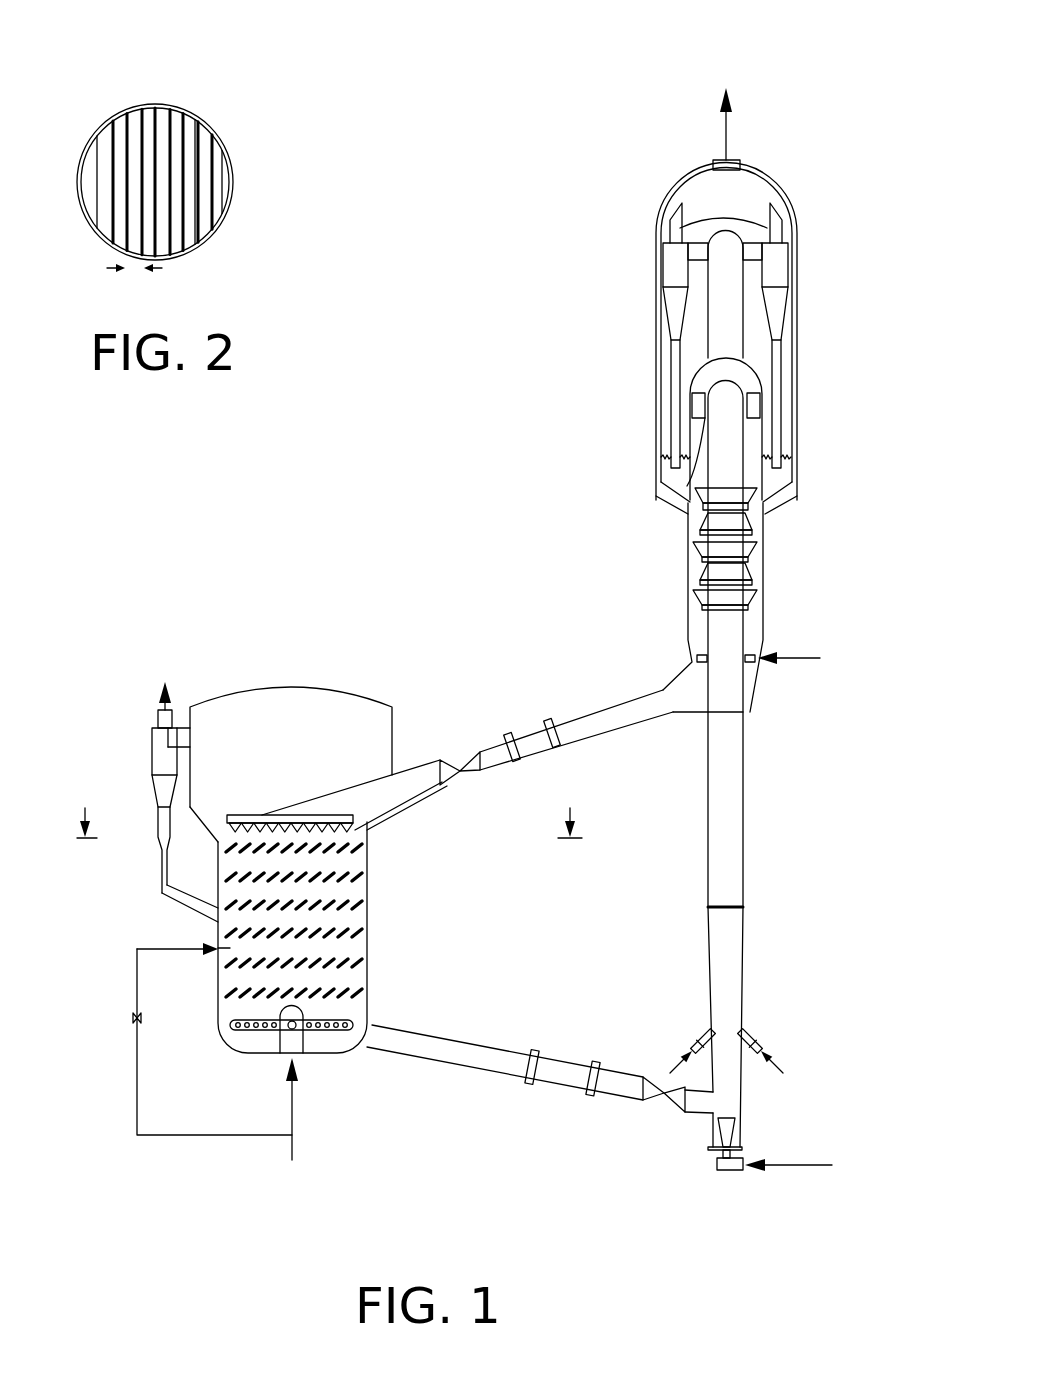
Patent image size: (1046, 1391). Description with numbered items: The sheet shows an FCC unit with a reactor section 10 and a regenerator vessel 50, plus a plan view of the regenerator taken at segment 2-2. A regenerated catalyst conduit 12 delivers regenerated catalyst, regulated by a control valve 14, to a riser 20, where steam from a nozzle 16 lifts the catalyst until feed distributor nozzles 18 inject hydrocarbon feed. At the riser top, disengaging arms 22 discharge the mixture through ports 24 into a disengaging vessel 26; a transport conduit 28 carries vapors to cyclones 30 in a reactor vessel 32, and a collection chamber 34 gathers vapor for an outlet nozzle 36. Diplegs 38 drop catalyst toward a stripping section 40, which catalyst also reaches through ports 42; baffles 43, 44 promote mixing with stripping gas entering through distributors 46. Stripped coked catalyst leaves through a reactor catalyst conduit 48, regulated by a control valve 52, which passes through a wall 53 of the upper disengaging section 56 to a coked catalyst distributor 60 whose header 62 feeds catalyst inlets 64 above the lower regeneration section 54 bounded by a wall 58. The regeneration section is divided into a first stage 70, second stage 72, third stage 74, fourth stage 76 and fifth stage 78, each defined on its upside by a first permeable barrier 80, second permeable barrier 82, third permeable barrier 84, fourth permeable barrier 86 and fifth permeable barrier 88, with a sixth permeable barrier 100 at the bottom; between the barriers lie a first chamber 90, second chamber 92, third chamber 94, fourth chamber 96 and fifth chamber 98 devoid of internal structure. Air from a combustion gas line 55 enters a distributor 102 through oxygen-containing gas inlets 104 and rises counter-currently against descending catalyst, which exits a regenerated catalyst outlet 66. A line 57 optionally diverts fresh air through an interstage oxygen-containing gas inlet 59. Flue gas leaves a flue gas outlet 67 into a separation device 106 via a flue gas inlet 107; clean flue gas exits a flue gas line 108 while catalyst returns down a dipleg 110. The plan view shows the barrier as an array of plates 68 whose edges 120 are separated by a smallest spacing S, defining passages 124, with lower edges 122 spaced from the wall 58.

In FIG. 1, the reactor section 10 is at (819, 114).
In FIG. 1, the regenerated catalyst conduit 12 is at (580, 1070).
In FIG. 1, the control valve 14 is at (662, 1100).
In FIG. 1, the nozzle 16 is at (731, 1130).
In FIG. 1, the feed distributor nozzles 18 is at (708, 1035).
In FIG. 1, the riser 20 is at (742, 869).
In FIG. 1, the disengaging arms 22 is at (668, 498).
In FIG. 1, the ports 24 is at (757, 405).
In FIG. 1, the disengaging vessel 26 is at (795, 492).
In FIG. 1, the transport conduit 28 is at (726, 332).
In FIG. 1, the cyclones 30 is at (670, 268).
In FIG. 1, the reactor vessel 32 is at (790, 392).
In FIG. 1, the collection chamber 34 is at (752, 187).
In FIG. 1, the outlet nozzle 36 is at (713, 160).
In FIG. 1, the diplegs 38 is at (673, 412).
In FIG. 1, the stripping section 40 is at (760, 582).
In FIG. 1, the ports 42 is at (760, 505).
In FIG. 1, the baffles 43 is at (752, 549).
In FIG. 1, the baffles 44 is at (748, 520).
In FIG. 1, the distributors 46 is at (750, 666).
In FIG. 1, the reactor catalyst conduit 48 is at (598, 738).
In FIG. 2, the regenerator vessel 50 is at (206, 36).
In FIG. 1, the regenerator vessel 50 is at (42, 650).
In FIG. 1, the control valve 52 is at (456, 760).
In FIG. 1, the wall 53 is at (392, 732).
In FIG. 2, the regeneration section 54 is at (242, 224).
In FIG. 1, the regeneration section 54 is at (218, 990).
In FIG. 1, the combustion gas line 55 is at (293, 1146).
In FIG. 1, the disengaging section 56 is at (250, 700).
In FIG. 1, the line 57 is at (137, 1094).
In FIG. 2, the wall 58 is at (80, 163).
In FIG. 1, the wall 58 is at (217, 983).
In FIG. 1, the interstage oxygen-containing gas inlet 59 is at (222, 945).
In FIG. 1, the coked catalyst distributor 60 is at (448, 815).
In FIG. 1, the header 62 is at (448, 775).
In FIG. 1, the catalyst inlets 64 is at (378, 818).
In FIG. 1, the regenerated catalyst outlet 66 is at (380, 1053).
In FIG. 1, the flue gas outlet 67 is at (193, 735).
In FIG. 2, the plates 68 is at (133, 120).
In FIG. 1, the plates 68 is at (224, 849).
In FIG. 1, the first stage 70 is at (418, 855).
In FIG. 1, the second stage 72 is at (428, 884).
In FIG. 1, the third stage 74 is at (428, 913).
In FIG. 1, the fourth stage 76 is at (438, 958).
In FIG. 1, the fifth stage 78 is at (438, 995).
In FIG. 2, the first permeable barrier 80 is at (220, 106).
In FIG. 1, the first permeable barrier 80 is at (236, 864).
In FIG. 1, the second permeable barrier 82 is at (355, 877).
In FIG. 1, the third permeable barrier 84 is at (352, 905).
In FIG. 1, the fourth permeable barrier 86 is at (342, 948).
In FIG. 1, the fifth permeable barrier 88 is at (363, 983).
In FIG. 1, the first chamber 90 is at (348, 860).
In FIG. 1, the second chamber 92 is at (242, 893).
In FIG. 1, the third chamber 94 is at (357, 918).
In FIG. 1, the fourth chamber 96 is at (353, 957).
In FIG. 1, the fifth chamber 98 is at (360, 997).
In FIG. 1, the sixth permeable barrier 100 is at (226, 1024).
In FIG. 1, the distributor 102 is at (277, 1043).
In FIG. 1, the oxygen-containing gas inlets 104 is at (333, 1029).
In FIG. 1, the separation device 106 is at (151, 753).
In FIG. 1, the flue gas inlet 107 is at (174, 727).
In FIG. 1, the flue gas line 108 is at (158, 706).
In FIG. 1, the dipleg 110 is at (160, 878).
In FIG. 2, the edges 120 is at (133, 130).
In FIG. 2, the lower edges 122 is at (83, 183).
In FIG. 2, the passages 124 is at (128, 138).
In FIG. 1, the passages 124 is at (385, 833).
In FIG. 2, the smallest spacing S is at (134, 282).
In FIG. 1, the segment 2- 2 is at (337, 824).